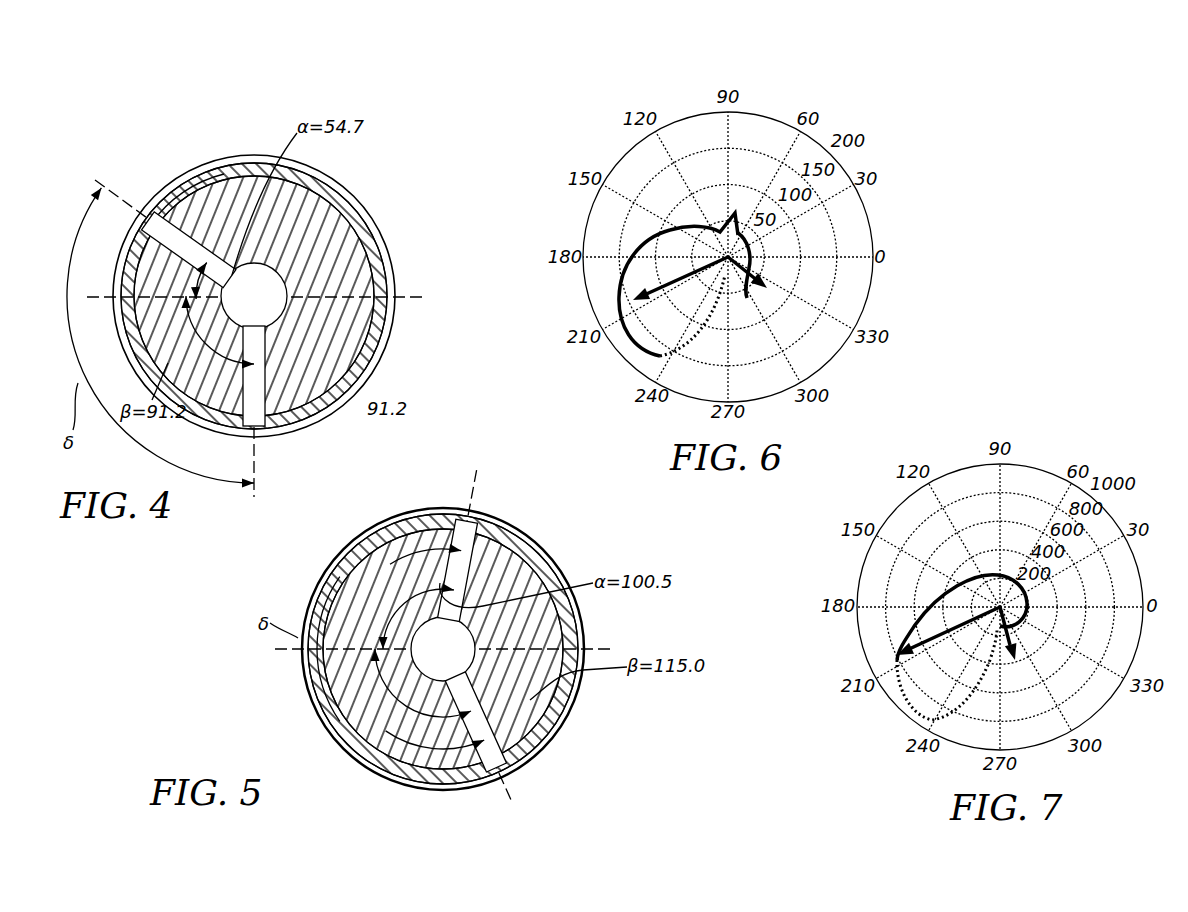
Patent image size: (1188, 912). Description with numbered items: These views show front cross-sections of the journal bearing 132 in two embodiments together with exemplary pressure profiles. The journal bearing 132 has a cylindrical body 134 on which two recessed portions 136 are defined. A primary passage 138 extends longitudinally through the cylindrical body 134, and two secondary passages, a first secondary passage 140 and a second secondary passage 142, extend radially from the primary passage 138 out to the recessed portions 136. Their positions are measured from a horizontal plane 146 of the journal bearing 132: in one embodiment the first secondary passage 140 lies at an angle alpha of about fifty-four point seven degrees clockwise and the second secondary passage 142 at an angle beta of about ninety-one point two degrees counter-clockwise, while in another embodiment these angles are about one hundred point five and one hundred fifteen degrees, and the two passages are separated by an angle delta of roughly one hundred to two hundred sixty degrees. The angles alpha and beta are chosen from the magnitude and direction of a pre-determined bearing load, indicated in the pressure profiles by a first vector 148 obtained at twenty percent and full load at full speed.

In FIG. 4, the journal bearing 132 is at (110, 128).
In FIG. 5, the journal bearing 132 is at (512, 458).
In FIG. 4, the cylindrical body 134 is at (333, 237).
In FIG. 5, the cylindrical body 134 is at (520, 590).
In FIG. 4, the recessed portions 136 is at (168, 195).
In FIG. 5, the recessed portions 136 is at (492, 526).
In FIG. 4, the primary passage 138 is at (278, 291).
In FIG. 5, the primary passage 138 is at (447, 645).
In FIG. 4, the first secondary passage 140 is at (187, 237).
In FIG. 5, the first secondary passage 140 is at (450, 543).
In FIG. 4, the second secondary passage 142 is at (250, 387).
In FIG. 5, the second secondary passage 142 is at (465, 770).
In FIG. 4, the horizontal plane 146 is at (98, 298).
In FIG. 5, the horizontal plane 146 is at (278, 657).
In FIG. 6, the first vector 148 is at (655, 285).
In FIG. 7, the first vector 148 is at (933, 640).